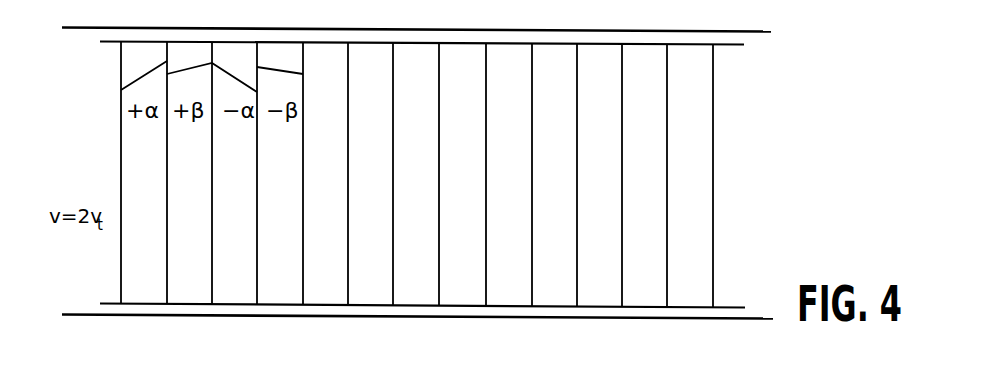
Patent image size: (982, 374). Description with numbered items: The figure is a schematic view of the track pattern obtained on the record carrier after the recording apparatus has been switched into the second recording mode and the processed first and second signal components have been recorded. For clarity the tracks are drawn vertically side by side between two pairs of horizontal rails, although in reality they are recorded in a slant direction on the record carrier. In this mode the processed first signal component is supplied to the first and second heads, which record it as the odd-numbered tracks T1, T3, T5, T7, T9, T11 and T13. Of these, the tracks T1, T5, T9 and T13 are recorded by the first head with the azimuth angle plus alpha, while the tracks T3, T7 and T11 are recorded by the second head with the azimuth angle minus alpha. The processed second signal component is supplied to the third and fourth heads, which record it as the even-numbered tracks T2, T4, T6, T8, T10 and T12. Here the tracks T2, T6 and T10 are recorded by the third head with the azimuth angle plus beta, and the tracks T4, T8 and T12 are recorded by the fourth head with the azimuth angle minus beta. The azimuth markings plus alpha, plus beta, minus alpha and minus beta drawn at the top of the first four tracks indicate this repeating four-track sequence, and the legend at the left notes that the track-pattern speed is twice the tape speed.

The track T1 is at (143, 282).
The track T2 is at (190, 282).
The track T3 is at (238, 282).
The track T4 is at (280, 282).
The track T5 is at (326, 282).
The track T6 is at (373, 282).
The track T7 is at (423, 282).
The track T8 is at (469, 282).
The track T9 is at (516, 282).
The track T10 is at (564, 282).
The track T11 is at (608, 282).
The track T12 is at (651, 282).
The track T13 is at (699, 282).